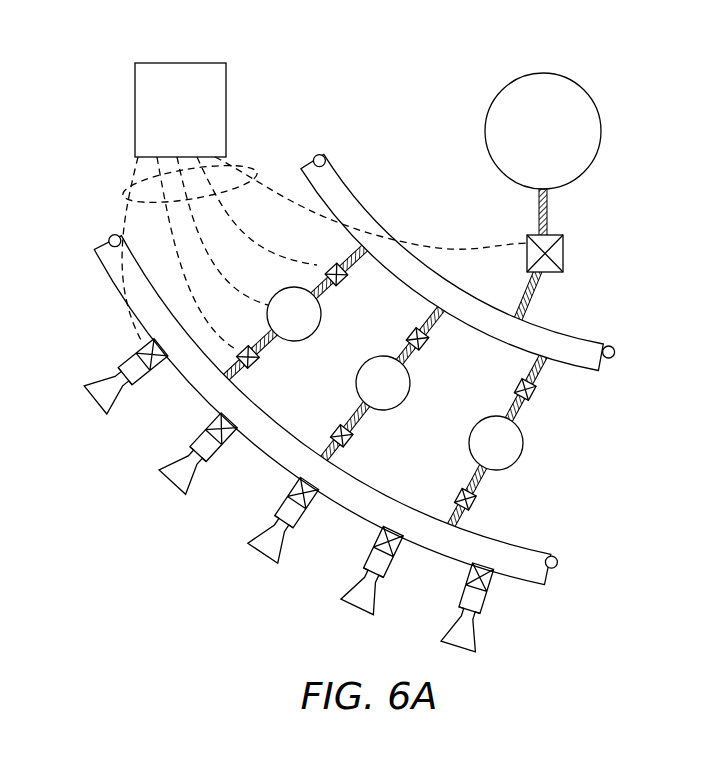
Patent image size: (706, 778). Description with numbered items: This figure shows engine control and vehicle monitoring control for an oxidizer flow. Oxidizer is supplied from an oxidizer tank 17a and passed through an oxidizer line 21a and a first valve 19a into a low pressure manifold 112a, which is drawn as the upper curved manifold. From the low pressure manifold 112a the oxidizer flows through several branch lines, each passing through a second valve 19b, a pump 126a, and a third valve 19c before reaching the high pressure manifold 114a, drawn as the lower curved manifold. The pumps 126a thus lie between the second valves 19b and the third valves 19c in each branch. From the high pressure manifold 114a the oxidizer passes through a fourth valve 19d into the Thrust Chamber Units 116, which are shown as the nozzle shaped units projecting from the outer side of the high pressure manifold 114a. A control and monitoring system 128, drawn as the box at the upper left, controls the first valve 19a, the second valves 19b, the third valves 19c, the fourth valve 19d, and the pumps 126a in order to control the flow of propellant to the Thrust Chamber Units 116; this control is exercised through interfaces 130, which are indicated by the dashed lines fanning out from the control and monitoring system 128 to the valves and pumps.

The control and monitoring system 128 is at (164, 100).
The interfaces 130 is at (255, 168).
The oxidizer tank 17a is at (529, 138).
The oxidizer line 21a is at (552, 213).
The first valve 19a is at (566, 256).
The second valves 19b is at (531, 393).
The third valves 19c is at (472, 503).
The fourth valve 19d is at (492, 587).
The low pressure manifold 112a is at (567, 348).
The high pressure manifold 114a is at (520, 563).
The pumps 126a is at (477, 454).
The Thrust Chamber Units (TCUs) 116 is at (463, 630).